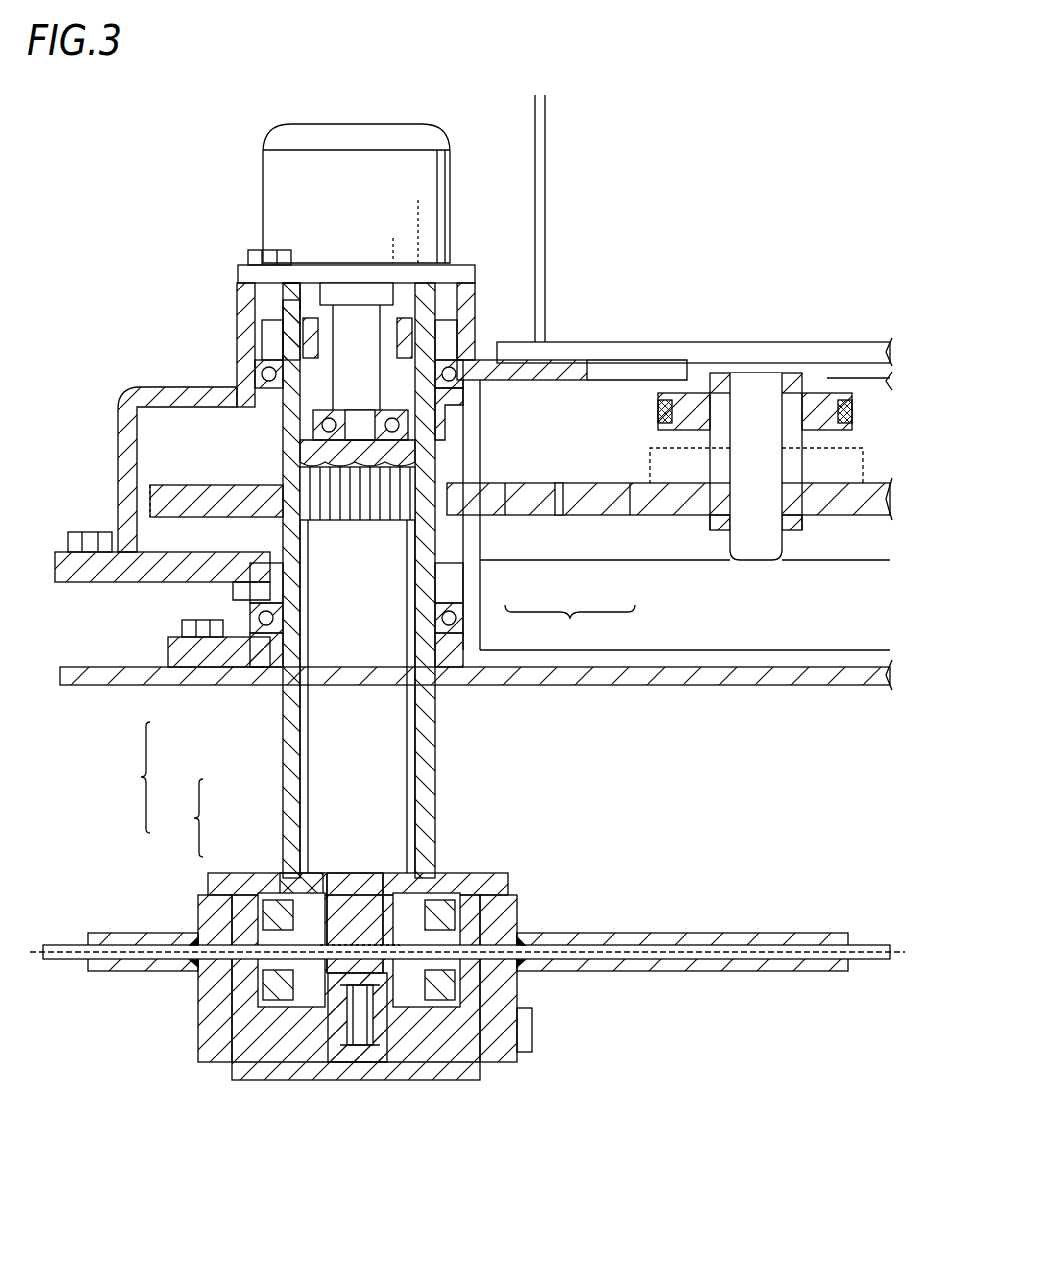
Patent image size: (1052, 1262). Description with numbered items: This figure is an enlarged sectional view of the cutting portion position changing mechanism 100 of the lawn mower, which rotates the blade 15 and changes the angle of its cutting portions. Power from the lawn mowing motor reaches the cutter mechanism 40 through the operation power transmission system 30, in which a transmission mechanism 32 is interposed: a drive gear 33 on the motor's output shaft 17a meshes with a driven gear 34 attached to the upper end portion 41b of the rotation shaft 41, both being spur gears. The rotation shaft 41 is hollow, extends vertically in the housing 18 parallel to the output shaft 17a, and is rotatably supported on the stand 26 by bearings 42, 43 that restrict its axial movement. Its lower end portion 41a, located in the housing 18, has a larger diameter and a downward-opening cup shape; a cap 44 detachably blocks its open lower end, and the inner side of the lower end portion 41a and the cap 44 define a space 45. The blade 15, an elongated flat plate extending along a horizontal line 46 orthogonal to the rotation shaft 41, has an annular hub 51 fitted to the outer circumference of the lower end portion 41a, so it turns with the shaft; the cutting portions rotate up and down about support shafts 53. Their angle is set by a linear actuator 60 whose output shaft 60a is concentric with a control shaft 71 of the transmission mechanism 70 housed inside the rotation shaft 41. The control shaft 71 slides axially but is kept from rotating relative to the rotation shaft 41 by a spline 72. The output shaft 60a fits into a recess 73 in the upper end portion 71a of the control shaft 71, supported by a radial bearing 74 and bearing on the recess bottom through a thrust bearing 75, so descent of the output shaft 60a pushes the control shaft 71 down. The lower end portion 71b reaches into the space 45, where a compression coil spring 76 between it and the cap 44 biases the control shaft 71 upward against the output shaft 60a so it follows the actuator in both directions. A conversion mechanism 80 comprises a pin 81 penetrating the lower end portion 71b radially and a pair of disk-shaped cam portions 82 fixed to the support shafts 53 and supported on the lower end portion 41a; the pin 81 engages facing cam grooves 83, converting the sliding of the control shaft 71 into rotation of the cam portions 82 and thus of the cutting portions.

The cutting portion position changing mechanism 100 is at (218, 220).
The actuator 60 is at (350, 145).
The output shaft 60a is at (352, 310).
The rotation shaft 41 is at (282, 720).
The lower end portion 41a is at (262, 1082).
The upper end portion 41b is at (290, 318).
The cutter mechanism 40 is at (130, 777).
The transmission mechanism 70 is at (180, 818).
The control shaft 71 is at (283, 776).
The upper end portion 71a is at (283, 410).
The lower end portion 71b is at (360, 870).
The spline 72 is at (345, 527).
The recess 73 is at (455, 425).
The radial bearing 74 is at (425, 322).
The thrust bearing 75 is at (283, 445).
The compression coil spring 76 is at (357, 1060).
The bearing 42 is at (257, 368).
The bearing 43 is at (250, 615).
The stand 26 is at (132, 390).
The housing 18 is at (88, 670).
The operation power transmission system 30 is at (833, 530).
The transmission mechanism 32 is at (669, 567).
The drive gear 33 is at (622, 520).
The driven gear 34 is at (513, 520).
The output shaft 17a is at (757, 562).
The cap 44 is at (405, 1082).
The space 45 is at (455, 1082).
The conversion mechanism 80 is at (283, 893).
The pin 81 is at (320, 1000).
The cam portion 82 is at (205, 1040).
The cam groove 83 is at (205, 993).
The hub 51 is at (525, 988).
The support shaft 53 is at (75, 940).
The blade 15 is at (98, 975).
The horizontal line 46 is at (620, 950).